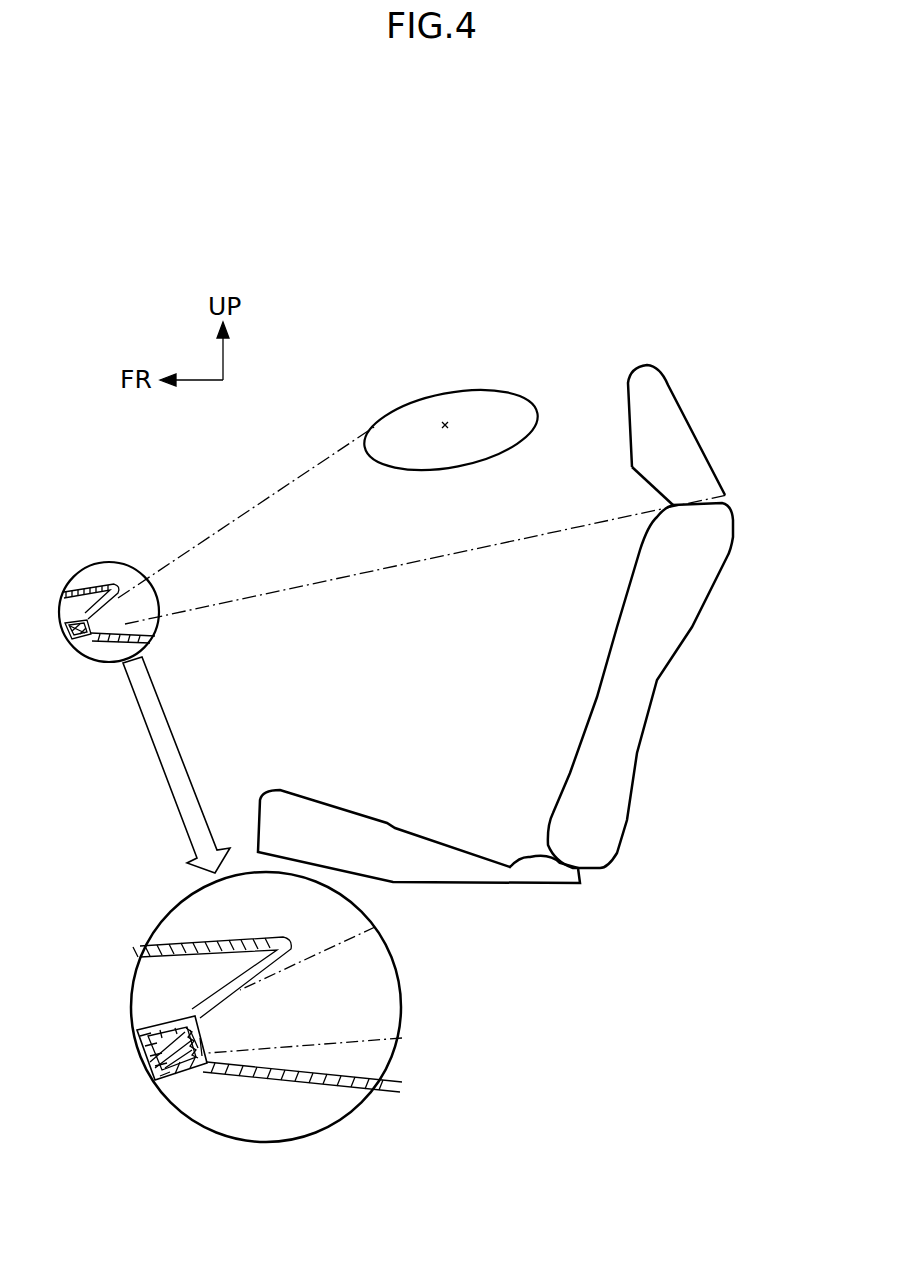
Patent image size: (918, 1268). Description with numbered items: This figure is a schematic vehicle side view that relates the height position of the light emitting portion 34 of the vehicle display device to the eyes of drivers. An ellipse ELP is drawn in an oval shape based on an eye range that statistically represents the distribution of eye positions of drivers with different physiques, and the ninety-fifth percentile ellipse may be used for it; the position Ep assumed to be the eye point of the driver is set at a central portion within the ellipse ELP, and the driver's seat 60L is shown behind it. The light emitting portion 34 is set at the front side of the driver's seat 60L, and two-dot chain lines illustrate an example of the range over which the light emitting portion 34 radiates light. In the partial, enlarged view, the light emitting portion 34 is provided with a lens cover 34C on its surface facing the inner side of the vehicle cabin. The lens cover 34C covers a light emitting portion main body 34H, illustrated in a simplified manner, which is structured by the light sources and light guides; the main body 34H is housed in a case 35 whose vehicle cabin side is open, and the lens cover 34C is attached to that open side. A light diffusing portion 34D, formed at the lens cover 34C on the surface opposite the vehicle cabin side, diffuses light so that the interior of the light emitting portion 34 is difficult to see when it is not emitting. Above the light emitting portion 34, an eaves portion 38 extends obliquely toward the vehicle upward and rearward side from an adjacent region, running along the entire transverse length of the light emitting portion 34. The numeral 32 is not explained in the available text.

The camera 32 is at (195, 1068).
The light emitting portion 34 is at (99, 621).
The lens cover 34C is at (205, 1038).
The light diffusing portion 34D is at (174, 1026).
The light emitting portion main body 34H is at (178, 1060).
The case 35 is at (140, 1053).
The eaves portion 38 is at (238, 993).
The driver's seat 60L is at (678, 672).
The eye point position Ep is at (445, 421).
The ellipse ELP is at (496, 388).